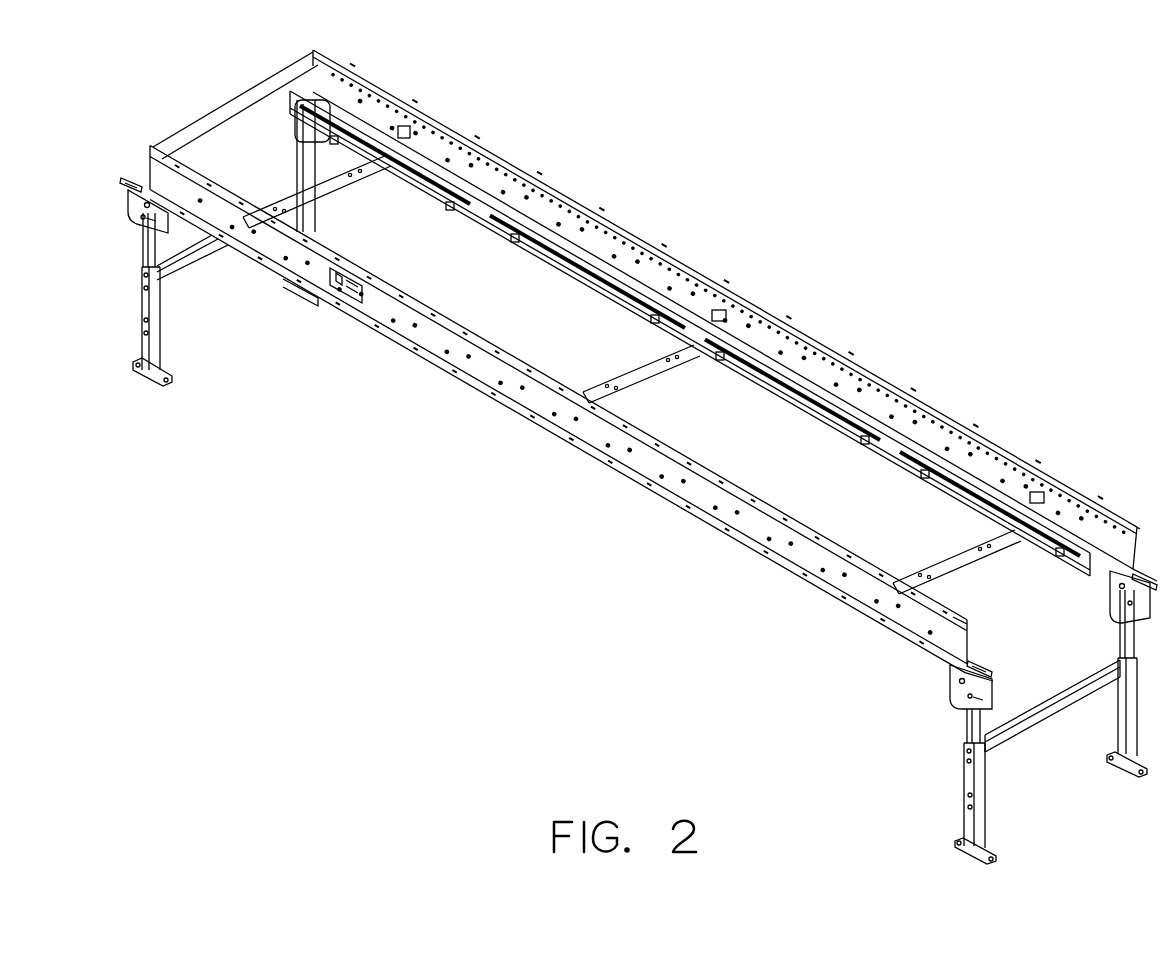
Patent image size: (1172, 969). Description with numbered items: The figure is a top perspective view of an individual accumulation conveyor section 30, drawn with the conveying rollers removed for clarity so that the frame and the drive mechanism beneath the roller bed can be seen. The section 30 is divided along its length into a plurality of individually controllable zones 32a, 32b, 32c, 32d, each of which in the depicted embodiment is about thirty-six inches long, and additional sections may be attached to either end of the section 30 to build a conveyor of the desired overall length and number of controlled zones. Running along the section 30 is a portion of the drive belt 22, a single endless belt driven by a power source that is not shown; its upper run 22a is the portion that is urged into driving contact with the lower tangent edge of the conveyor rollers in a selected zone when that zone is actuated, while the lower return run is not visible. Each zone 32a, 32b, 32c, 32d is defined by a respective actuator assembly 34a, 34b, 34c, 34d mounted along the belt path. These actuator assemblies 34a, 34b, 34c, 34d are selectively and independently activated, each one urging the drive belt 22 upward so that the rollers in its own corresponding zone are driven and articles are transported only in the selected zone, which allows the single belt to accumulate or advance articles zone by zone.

The accumulation conveyor section 30 is at (638, 457).
The drive belt 22 is at (706, 322).
The upper run 22a is at (902, 438).
The zone 32a is at (443, 228).
The zone 32b is at (648, 345).
The zone 32c is at (853, 466).
The zone 32d is at (1060, 582).
The actuator assembly 34a is at (388, 176).
The actuator assembly 34b is at (571, 292).
The actuator assembly 34c is at (797, 420).
The actuator assembly 34d is at (970, 513).